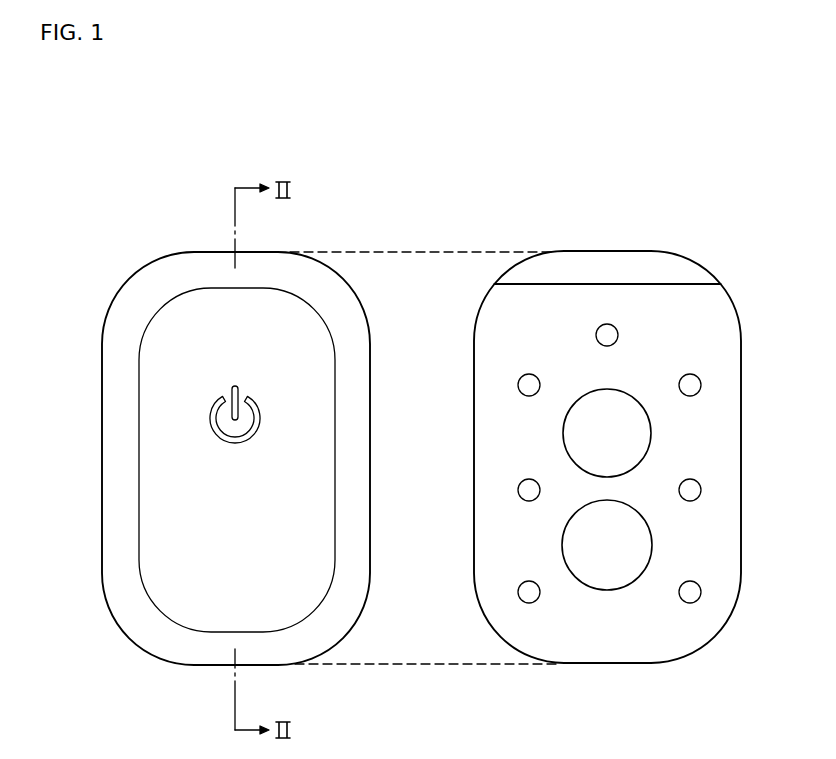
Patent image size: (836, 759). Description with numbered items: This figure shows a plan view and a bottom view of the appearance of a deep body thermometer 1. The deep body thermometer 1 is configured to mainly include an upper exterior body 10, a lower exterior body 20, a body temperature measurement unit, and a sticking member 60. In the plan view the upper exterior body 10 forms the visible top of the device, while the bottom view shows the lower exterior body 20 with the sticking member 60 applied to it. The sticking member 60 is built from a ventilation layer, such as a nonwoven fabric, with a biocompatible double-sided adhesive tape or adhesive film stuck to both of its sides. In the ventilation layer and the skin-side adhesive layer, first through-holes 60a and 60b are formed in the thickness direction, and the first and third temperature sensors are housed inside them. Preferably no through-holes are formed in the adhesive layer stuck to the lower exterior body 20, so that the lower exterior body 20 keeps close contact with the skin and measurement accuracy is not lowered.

The deep body thermometer 1 is at (302, 248).
The upper exterior body 10 is at (358, 455).
The lower exterior body 20 is at (522, 273).
The sticking member 60 is at (482, 526).
The first through-hole 60a is at (577, 442).
The first through-hole 60b is at (577, 555).